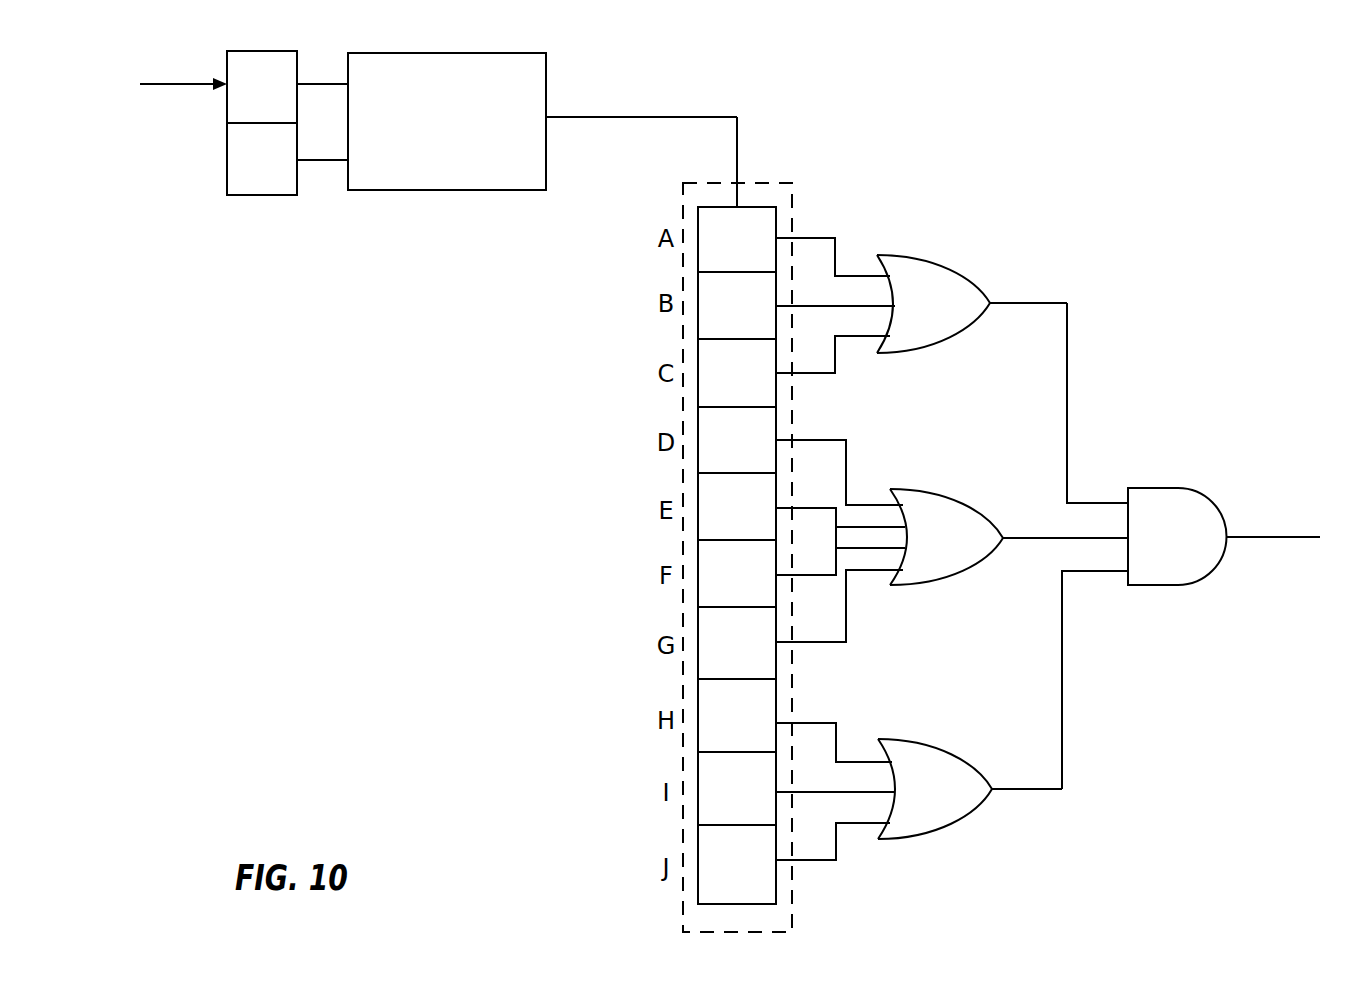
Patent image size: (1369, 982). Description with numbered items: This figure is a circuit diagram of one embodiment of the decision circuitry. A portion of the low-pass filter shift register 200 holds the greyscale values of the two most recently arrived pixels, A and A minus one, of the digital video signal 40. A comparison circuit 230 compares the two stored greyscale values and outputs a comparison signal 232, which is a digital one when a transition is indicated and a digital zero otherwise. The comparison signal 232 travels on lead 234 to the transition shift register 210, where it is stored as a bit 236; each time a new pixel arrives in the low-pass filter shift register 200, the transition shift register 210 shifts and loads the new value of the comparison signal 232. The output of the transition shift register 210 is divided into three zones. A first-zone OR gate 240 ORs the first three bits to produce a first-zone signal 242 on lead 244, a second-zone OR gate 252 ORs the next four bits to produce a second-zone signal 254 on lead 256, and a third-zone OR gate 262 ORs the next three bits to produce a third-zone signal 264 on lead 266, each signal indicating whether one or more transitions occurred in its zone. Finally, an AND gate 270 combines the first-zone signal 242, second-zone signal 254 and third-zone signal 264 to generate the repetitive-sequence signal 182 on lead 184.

The digital video signal 40 is at (150, 84).
The low-pass filter shift register 200 is at (200, 141).
The comparison circuit 230 is at (546, 72).
The lead 234 is at (627, 117).
The comparison signal 232 is at (723, 114).
The transition shift register 210 is at (763, 183).
The bit 236 is at (763, 222).
The zone 1 OR gate 240 is at (955, 276).
The zone 1 signal 242 is at (1033, 302).
The lead 244 is at (1068, 345).
The zone 2 OR gate 252 is at (927, 488).
The lead 256 is at (1013, 535).
The zone 2 signal 254 is at (1038, 543).
The zone 3 OR gate 262 is at (912, 738).
The zone 3 signal 264 is at (1022, 793).
The lead 266 is at (1062, 725).
The AND gate 270 is at (1180, 586).
The repetitive-sequence signal 182 is at (1243, 535).
The lead 184 is at (1277, 535).